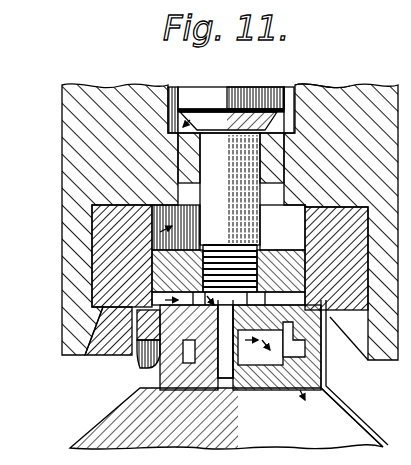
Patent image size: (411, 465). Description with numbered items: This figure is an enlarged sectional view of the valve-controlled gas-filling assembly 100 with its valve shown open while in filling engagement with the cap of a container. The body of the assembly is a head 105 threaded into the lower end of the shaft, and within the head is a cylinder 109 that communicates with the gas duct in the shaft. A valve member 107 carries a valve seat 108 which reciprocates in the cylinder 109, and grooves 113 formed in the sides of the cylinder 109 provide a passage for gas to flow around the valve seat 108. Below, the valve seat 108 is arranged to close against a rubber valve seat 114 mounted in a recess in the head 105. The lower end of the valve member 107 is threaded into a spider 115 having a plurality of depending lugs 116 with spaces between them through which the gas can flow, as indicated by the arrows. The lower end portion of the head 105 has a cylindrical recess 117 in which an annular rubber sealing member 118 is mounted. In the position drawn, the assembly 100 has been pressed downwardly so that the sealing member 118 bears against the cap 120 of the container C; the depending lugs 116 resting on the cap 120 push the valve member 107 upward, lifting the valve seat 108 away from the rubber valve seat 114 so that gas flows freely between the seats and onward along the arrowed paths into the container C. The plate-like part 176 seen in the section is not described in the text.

The gas-filling assembly 100 is at (205, 222).
The head 105 is at (67, 212).
The valve member 107 is at (258, 219).
The valve seat 108 is at (272, 80).
The cylinder 109 is at (230, 78).
The grooves 113 is at (168, 88).
The rubber valve seat 114 is at (354, 87).
The spider 115 is at (228, 248).
The depending lugs 116 is at (118, 333).
The cylindrical recess 117 is at (92, 272).
The annular rubber sealing member 118 is at (98, 300).
The cap 120 is at (122, 358).
The plate 176 is at (228, 301).
The container C is at (357, 435).